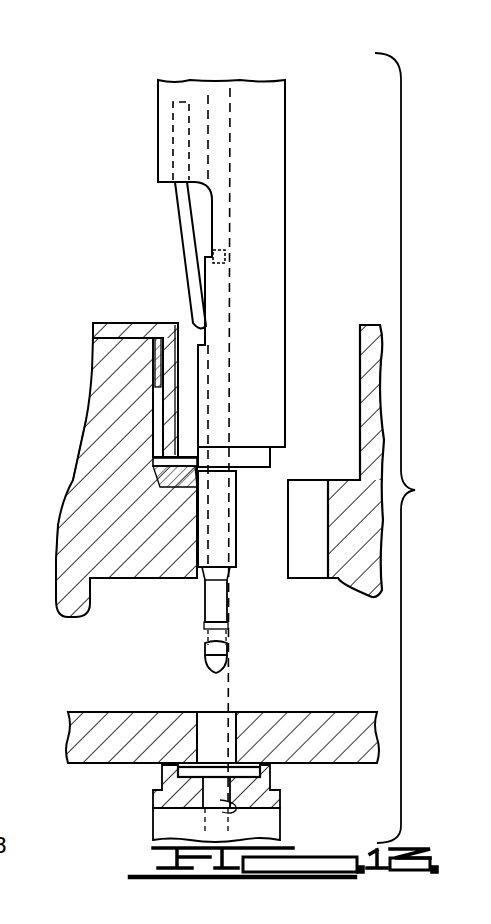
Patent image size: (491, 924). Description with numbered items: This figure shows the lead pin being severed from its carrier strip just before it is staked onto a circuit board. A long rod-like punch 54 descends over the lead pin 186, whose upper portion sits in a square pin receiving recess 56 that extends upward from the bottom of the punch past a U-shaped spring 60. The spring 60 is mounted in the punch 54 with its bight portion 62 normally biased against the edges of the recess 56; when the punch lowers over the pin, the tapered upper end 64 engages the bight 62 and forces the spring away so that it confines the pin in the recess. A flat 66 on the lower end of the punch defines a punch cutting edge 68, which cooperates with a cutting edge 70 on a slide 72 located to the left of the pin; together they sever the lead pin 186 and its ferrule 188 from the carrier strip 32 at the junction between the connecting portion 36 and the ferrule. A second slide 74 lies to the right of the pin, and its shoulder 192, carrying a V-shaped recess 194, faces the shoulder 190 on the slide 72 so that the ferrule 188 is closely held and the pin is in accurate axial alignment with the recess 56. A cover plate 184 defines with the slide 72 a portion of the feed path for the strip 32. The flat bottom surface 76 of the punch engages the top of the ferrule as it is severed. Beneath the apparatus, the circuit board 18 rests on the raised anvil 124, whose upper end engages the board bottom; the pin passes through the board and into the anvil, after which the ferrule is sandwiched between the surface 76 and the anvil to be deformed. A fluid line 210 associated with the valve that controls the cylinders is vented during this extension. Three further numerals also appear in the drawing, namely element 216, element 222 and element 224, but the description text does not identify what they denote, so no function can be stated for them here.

The circuit board 18 is at (103, 712).
The carrier strip 32 is at (82, 458).
The connecting portion 36 is at (163, 480).
The punch 54 is at (270, 80).
The pin receiving recess 56 is at (220, 407).
The U-shaped spring 60 is at (178, 205).
The bight portion 62 is at (190, 320).
The tapered upper end 64 is at (226, 256).
The flat 66 is at (196, 371).
The punch cutting edge 68 is at (200, 464).
The cutting edge 70 is at (126, 477).
The slide 72 is at (75, 527).
The second slide 74 is at (362, 325).
The flat bottom surface 76 is at (260, 469).
The anvil 124 is at (158, 815).
The cover plate 184 is at (103, 325).
The lead pin 186 is at (233, 615).
The ferrule 188 is at (245, 537).
The shoulder 190 is at (145, 582).
The shoulder 192 is at (322, 580).
The V-shaped recess 194 is at (305, 578).
The line 210 is at (237, 723).
The punch point 216 is at (234, 580).
The spacer plate 222 is at (270, 777).
The die button 224 is at (230, 815).